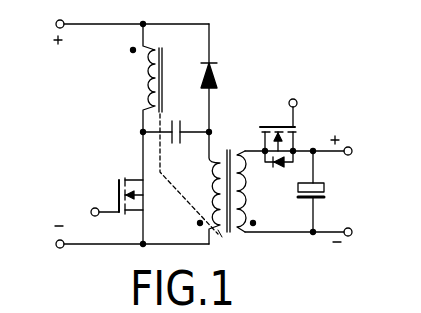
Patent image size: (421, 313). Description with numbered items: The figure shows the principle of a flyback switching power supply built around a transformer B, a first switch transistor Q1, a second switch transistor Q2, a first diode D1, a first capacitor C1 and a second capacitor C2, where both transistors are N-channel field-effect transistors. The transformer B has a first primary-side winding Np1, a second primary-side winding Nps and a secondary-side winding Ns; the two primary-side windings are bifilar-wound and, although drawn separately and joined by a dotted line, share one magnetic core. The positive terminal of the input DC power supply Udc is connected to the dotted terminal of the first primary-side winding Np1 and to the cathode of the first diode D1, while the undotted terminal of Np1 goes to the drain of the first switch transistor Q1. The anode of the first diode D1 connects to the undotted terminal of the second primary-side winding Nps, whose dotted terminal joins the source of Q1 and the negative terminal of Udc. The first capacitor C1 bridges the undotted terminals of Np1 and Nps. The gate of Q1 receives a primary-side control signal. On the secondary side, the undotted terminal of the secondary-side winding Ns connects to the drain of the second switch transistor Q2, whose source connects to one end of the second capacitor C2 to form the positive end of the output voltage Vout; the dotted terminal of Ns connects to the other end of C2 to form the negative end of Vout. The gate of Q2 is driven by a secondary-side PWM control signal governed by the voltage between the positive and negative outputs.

The first primary-side winding Np1 is at (139, 78).
The second primary-side winding Nps is at (201, 188).
The secondary-side winding Ns is at (246, 191).
The first diode D1 is at (200, 78).
The first capacitor C1 is at (176, 141).
The second capacitor C2 is at (316, 191).
The first switch transistor Q1 is at (117, 206).
The second switch transistor Q2 is at (285, 133).
The input DC power supply Udc is at (55, 128).
The output voltage Vout is at (349, 194).
The transformer B is at (221, 147).